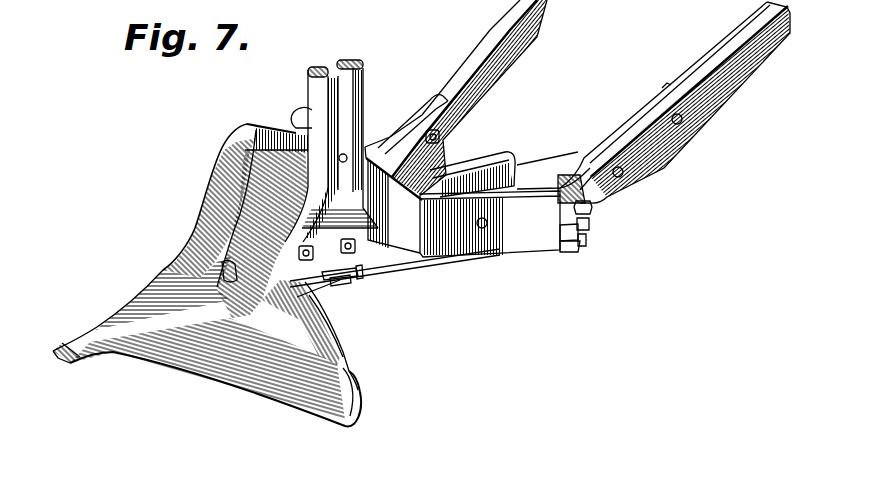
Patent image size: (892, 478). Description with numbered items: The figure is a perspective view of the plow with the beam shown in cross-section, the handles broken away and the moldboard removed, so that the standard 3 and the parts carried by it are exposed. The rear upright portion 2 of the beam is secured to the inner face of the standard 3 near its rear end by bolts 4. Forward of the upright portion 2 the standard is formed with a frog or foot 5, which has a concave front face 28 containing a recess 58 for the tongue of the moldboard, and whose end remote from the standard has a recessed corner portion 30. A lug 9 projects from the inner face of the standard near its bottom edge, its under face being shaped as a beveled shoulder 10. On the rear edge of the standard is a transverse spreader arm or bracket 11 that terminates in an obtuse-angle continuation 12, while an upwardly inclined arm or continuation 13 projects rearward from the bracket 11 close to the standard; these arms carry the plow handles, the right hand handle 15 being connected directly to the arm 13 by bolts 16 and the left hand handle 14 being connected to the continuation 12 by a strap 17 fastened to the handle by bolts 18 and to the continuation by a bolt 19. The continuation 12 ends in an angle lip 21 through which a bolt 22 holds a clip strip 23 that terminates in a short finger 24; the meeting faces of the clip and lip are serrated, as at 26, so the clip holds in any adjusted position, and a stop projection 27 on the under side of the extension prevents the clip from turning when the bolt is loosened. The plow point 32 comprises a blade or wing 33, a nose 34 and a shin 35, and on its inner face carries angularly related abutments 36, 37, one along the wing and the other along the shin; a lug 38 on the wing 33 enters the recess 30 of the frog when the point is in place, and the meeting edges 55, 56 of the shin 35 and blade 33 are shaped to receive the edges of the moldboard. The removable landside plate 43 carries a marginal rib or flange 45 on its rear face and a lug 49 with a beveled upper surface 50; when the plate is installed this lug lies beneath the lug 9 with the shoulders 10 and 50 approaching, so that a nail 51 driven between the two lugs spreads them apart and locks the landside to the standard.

The rear upright portion 2 is at (358, 63).
The standard 3 is at (279, 129).
The bolts 4 is at (348, 156).
The frog or foot 5 is at (340, 350).
The lug 9 is at (344, 252).
The beveled shoulder 10 is at (318, 270).
The spreader arm or bracket 11 is at (393, 200).
The obtuse-angle continuation 12 is at (490, 224).
The arm or continuation 13 is at (406, 118).
The left hand handle 14 is at (733, 82).
The right hand handle 15 is at (470, 60).
The bolts 16 is at (441, 138).
The strap 17 is at (620, 126).
The bolts 18 is at (623, 173).
The bolt 19 is at (484, 228).
The angle lip 21 is at (568, 180).
The bolt 22 is at (593, 209).
The clip strip 23 is at (590, 232).
The short finger 24 is at (569, 253).
The serrations 26 is at (558, 234).
The stop projection 27 is at (584, 246).
The concave front face 28 is at (262, 241).
The recessed corner portion 30 is at (699, 5).
The plow point 32 is at (201, 210).
The blade or wing 33 is at (215, 340).
The nose 34 is at (78, 361).
The shin 35 is at (187, 248).
The abutment 36 is at (304, 5).
The abutment 37 is at (258, 5).
The lug 38 is at (388, 5).
The landside plate 43 is at (478, 162).
The marginal rib or flange 45 is at (531, 163).
The lug 49 is at (336, 282).
The beveled upper surface 50 is at (344, 286).
The nail 51 is at (356, 278).
The meeting edge of shin 55 is at (235, 164).
The meeting edge of blade 56 is at (355, 378).
The recess 58 is at (224, 272).